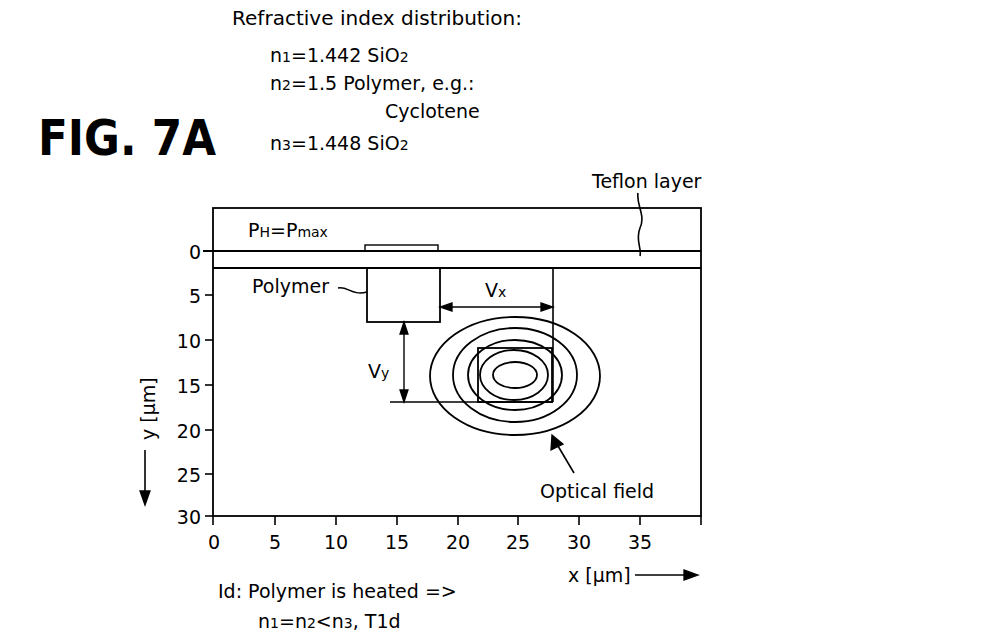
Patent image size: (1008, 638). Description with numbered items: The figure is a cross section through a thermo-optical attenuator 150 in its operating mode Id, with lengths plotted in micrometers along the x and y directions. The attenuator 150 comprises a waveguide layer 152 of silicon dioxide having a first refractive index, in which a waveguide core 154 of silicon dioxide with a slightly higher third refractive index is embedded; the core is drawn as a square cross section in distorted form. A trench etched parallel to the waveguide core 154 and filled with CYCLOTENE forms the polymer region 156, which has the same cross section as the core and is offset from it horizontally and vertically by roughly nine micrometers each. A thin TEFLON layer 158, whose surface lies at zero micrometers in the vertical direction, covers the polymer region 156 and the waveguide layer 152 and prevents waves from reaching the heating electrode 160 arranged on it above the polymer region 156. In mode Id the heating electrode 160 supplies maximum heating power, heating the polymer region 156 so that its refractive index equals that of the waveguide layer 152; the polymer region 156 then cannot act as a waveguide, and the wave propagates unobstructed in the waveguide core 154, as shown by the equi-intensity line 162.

The thermo-optical attenuator 150 is at (152, 318).
The waveguide layer 152 is at (278, 440).
The waveguide core 154 is at (548, 376).
The polymer region 156 is at (367, 307).
The TEFLON layer 158 is at (612, 270).
The heating electrode 160 is at (428, 245).
The equi-intensity line 162 is at (600, 380).